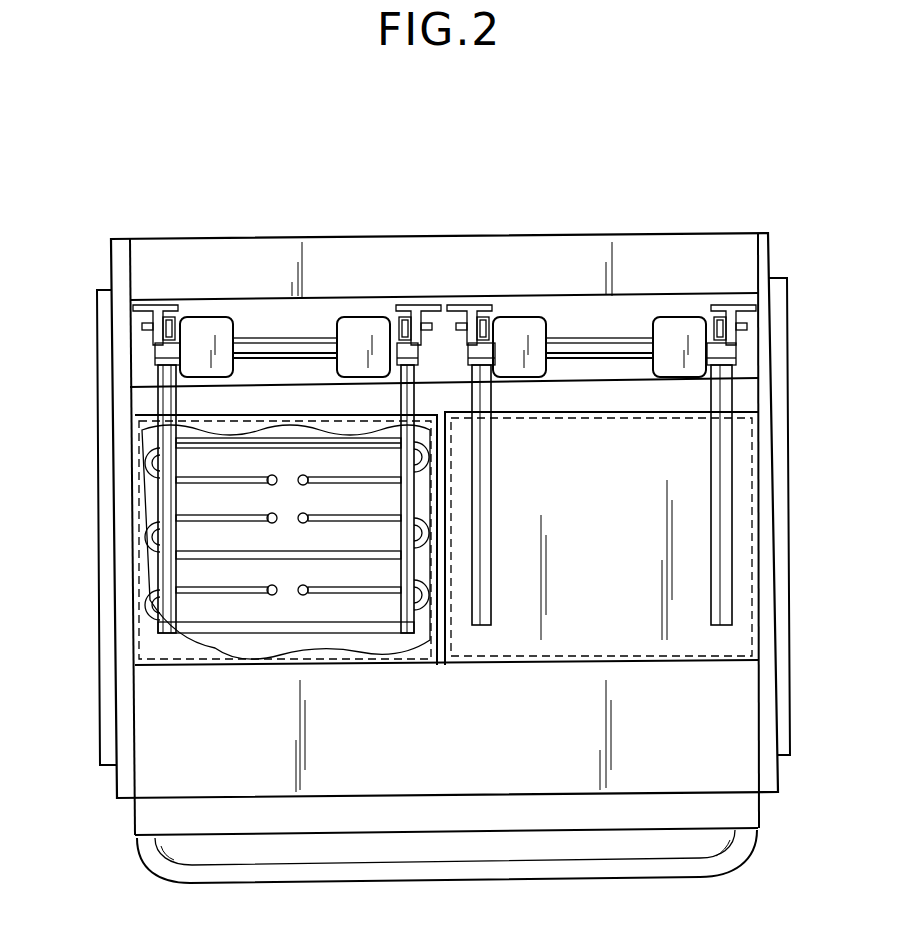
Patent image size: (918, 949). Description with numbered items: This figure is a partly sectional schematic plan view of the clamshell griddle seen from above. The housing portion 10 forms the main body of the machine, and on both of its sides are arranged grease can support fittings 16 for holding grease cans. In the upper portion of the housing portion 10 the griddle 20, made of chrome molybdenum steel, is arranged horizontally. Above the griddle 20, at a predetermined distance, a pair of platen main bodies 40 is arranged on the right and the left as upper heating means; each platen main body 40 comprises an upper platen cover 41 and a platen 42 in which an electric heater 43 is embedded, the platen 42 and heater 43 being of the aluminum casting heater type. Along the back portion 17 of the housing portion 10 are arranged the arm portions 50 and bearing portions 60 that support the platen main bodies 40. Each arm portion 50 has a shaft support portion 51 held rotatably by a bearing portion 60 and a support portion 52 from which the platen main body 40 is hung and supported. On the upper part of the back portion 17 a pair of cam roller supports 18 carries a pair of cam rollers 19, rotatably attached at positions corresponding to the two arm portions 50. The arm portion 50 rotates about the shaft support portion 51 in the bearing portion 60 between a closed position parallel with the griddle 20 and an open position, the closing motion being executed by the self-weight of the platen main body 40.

The housing portion 10 is at (788, 592).
The grease can support fitting 16 is at (97, 352).
The back portion 17 is at (181, 267).
The cum roller support 18 is at (462, 302).
The cum roller 19 is at (478, 303).
The griddle 20 is at (190, 753).
The platen main body 40 is at (150, 650).
The upper platen cover 41 is at (735, 635).
The platen 42 is at (203, 612).
The electric heater 43 is at (153, 600).
The arm portion 50 is at (735, 452).
The shaft support portion 51 is at (727, 343).
The support portion 52 is at (723, 530).
The bearing portion 60 is at (522, 297).